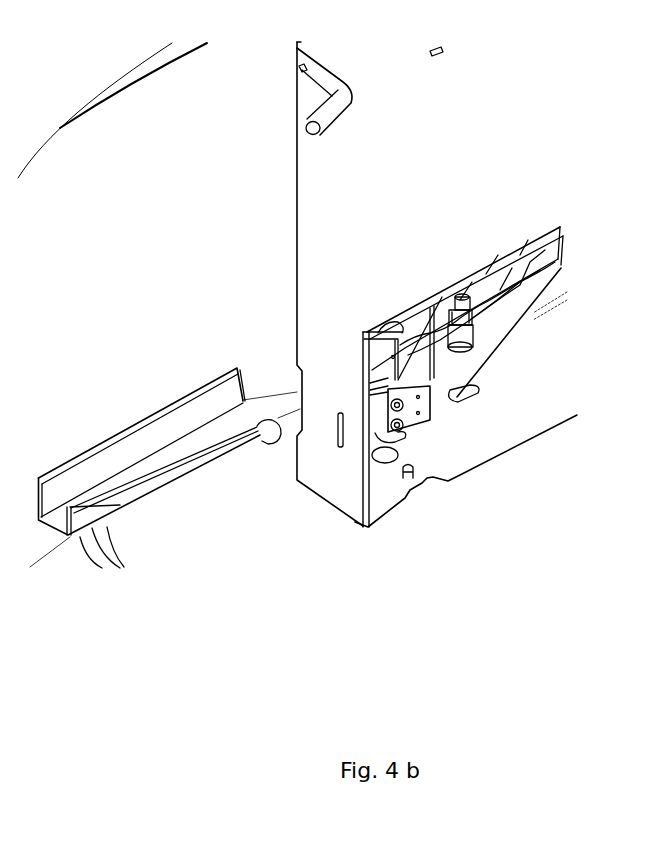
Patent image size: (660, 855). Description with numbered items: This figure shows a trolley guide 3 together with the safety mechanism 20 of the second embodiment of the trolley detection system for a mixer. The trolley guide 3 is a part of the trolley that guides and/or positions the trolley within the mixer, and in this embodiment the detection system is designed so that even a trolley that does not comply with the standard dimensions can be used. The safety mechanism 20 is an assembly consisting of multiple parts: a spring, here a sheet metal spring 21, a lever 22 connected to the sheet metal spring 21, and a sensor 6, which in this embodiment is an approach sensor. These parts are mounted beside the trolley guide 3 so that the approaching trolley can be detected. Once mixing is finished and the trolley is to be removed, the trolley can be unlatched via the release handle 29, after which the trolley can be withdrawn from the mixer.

The trolley guide 3 is at (187, 450).
The release handle 29 is at (314, 134).
The sheet metal spring 21 is at (417, 415).
The sensor 6 is at (459, 338).
The safety mechanism 20 is at (499, 397).
The lever 22 is at (530, 301).